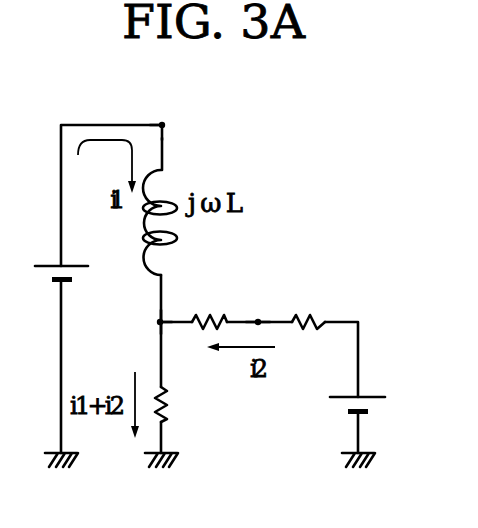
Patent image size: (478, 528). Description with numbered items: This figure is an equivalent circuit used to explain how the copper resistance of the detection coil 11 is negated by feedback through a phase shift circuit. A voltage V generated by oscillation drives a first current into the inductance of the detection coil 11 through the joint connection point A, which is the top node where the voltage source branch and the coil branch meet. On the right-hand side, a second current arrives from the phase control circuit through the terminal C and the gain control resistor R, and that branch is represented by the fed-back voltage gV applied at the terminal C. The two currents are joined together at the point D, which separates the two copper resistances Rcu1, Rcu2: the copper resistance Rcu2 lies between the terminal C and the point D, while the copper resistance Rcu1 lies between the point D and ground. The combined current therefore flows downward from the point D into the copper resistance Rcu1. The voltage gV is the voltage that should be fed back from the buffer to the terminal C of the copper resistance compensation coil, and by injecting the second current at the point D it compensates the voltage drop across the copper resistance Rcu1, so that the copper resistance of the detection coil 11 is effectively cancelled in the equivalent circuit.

The detection coil 11 is at (170, 186).
The joint connection point A is at (163, 124).
The terminal C is at (258, 320).
The point D is at (159, 319).
The voltage V is at (60, 255).
The voltage fed back from the buffer gV is at (368, 386).
The gain control resistor R is at (308, 305).
The copper resistance Rcu1 is at (195, 404).
The copper resistance Rcu2 is at (204, 305).